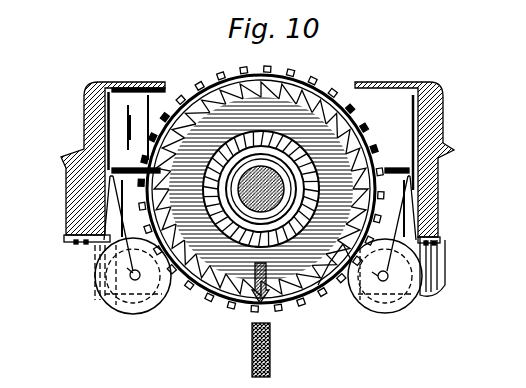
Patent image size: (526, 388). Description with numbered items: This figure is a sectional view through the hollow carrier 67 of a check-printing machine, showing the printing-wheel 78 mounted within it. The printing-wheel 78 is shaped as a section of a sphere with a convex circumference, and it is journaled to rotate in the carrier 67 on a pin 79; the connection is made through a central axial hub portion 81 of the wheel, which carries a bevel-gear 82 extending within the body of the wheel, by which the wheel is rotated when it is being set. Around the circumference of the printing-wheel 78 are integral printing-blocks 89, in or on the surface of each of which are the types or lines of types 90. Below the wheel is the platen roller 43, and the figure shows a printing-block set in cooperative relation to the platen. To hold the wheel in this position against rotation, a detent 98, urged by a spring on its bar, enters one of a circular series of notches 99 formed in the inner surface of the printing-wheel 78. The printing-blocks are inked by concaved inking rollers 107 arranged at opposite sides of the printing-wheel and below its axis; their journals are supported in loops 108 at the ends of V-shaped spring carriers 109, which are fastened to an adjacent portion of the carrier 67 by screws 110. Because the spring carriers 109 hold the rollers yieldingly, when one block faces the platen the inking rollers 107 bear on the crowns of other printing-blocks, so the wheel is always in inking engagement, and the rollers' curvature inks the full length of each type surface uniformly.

The platen roller 43 is at (272, 360).
The carrier 67 is at (435, 108).
The printing-wheel 78 is at (350, 102).
The pin 79 is at (283, 186).
The hub portion 81 is at (207, 298).
The bevel-gear 82 is at (283, 141).
The printing-blocks 89 is at (342, 96).
The types 90 is at (322, 303).
The detent 98 is at (247, 205).
The notches 99 is at (343, 244).
The inking rollers 107 is at (133, 314).
The loops 108 is at (130, 279).
The V-shaped spring carriers 109 is at (109, 238).
The screws 110 is at (80, 239).